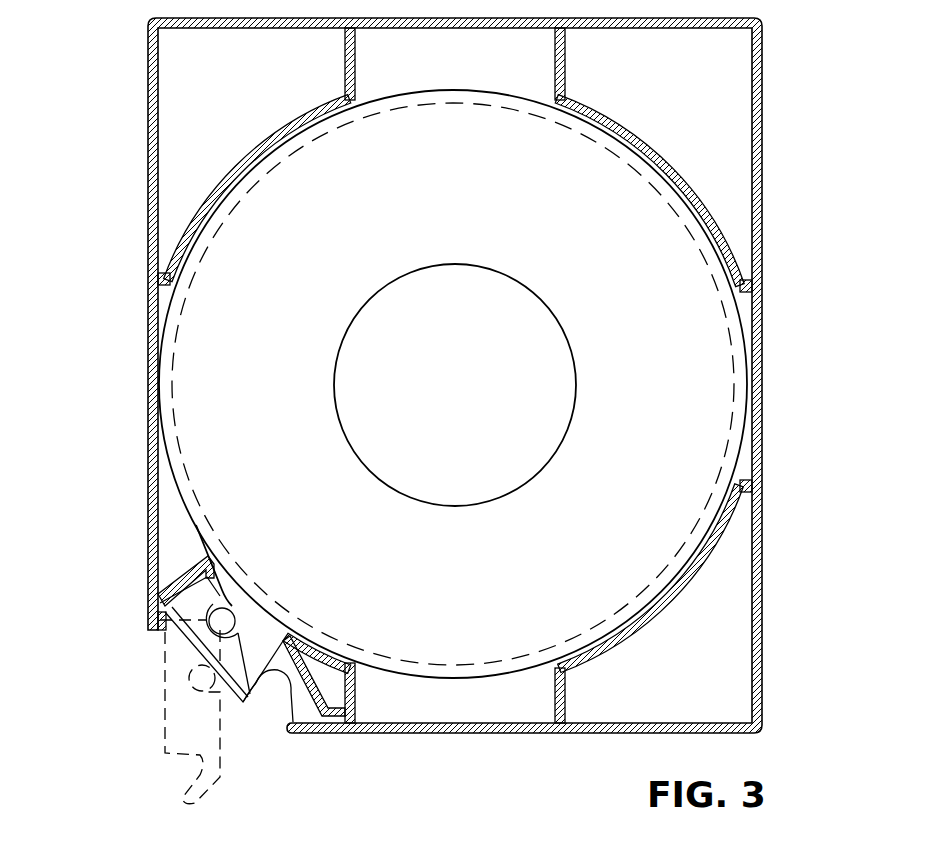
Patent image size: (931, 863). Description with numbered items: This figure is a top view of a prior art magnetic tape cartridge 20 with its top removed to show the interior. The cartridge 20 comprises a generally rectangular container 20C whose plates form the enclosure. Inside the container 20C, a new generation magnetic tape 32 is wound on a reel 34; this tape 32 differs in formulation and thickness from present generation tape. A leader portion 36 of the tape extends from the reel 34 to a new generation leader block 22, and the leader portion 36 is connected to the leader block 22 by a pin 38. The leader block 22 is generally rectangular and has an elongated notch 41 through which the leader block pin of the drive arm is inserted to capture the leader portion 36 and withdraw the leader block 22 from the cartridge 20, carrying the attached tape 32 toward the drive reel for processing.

The magnetic tape cartridge 20 is at (146, 173).
The container 20C is at (762, 170).
The leader block 22 is at (188, 645).
The magnetic tape 32 is at (170, 398).
The reel 34 is at (574, 357).
The leader portion 36 is at (224, 591).
The pin 38 is at (246, 604).
The elongated notch 41 is at (262, 693).